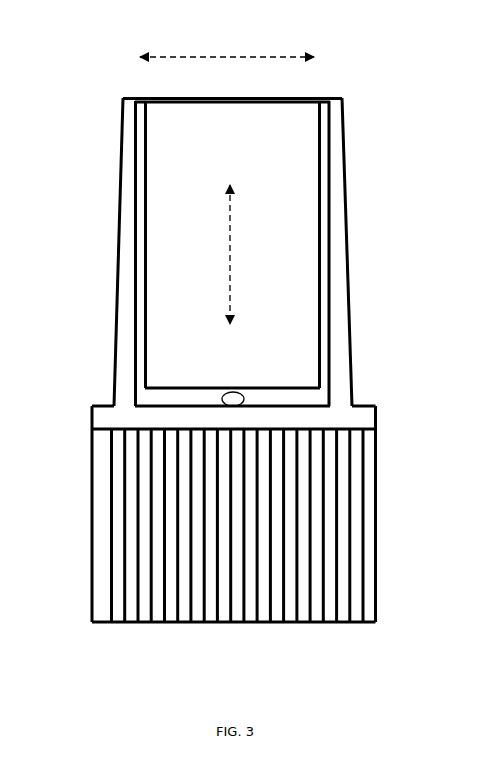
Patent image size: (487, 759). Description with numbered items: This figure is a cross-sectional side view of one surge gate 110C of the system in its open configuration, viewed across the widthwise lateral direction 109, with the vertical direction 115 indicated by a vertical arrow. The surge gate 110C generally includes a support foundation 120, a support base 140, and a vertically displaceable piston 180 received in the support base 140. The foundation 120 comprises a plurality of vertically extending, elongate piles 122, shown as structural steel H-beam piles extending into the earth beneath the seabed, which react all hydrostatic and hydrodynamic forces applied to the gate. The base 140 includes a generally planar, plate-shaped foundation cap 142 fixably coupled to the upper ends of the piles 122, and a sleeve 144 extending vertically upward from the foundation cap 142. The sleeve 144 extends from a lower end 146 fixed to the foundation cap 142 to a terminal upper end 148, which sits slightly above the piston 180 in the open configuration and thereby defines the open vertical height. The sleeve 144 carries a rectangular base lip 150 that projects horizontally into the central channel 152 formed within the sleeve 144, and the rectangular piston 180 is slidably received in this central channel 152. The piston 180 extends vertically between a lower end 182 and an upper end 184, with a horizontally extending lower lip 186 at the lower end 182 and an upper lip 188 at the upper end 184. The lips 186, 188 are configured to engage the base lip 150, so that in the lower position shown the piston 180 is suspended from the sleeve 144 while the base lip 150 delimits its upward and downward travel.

The surge gate 110C is at (70, 97).
The lateral direction 109 is at (198, 55).
The vertical direction 115 is at (231, 232).
The support foundation 120 is at (353, 497).
The piles 122 is at (366, 537).
The support base 140 is at (357, 412).
The foundation cap 142 is at (92, 437).
The sleeve 144 is at (343, 325).
The lower end 146 is at (352, 404).
The upper end 148 is at (340, 97).
The base lip 150 is at (325, 104).
The central channel 152 is at (135, 315).
The piston 180 is at (282, 175).
The lower end 182 is at (193, 386).
The upper end 184 is at (193, 103).
The lower lip 186 is at (135, 385).
The upper lip 188 is at (318, 98).